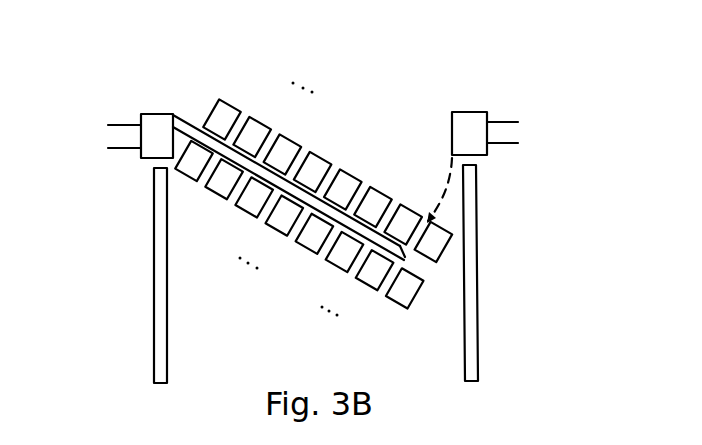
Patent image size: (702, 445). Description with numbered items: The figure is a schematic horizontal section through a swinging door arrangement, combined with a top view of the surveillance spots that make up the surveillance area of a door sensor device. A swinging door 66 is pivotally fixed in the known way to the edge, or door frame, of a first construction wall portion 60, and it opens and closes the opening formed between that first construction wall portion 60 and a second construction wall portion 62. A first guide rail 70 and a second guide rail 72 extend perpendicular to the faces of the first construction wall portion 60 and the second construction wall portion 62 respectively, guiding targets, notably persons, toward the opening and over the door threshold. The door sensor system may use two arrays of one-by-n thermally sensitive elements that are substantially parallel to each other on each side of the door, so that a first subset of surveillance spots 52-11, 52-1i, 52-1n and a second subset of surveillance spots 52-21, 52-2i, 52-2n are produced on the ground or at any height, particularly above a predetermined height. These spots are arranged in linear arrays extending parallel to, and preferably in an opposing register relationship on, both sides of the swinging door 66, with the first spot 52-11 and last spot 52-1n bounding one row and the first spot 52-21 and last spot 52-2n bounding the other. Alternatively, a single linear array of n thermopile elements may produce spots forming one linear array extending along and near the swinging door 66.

The surveillance spot 52-21 is at (228, 110).
The surveillance spot 52-2i is at (320, 160).
The surveillance spot 52-2n is at (437, 235).
The surveillance spot 52-11 is at (185, 175).
The surveillance spot 52-1i is at (279, 237).
The surveillance spot 52-1n is at (398, 297).
The first construction wall portion 60 is at (123, 142).
The second construction wall portion 62 is at (504, 143).
The swinging door 66 is at (405, 262).
The first guide rail 70 is at (160, 333).
The second guide rail 72 is at (470, 362).